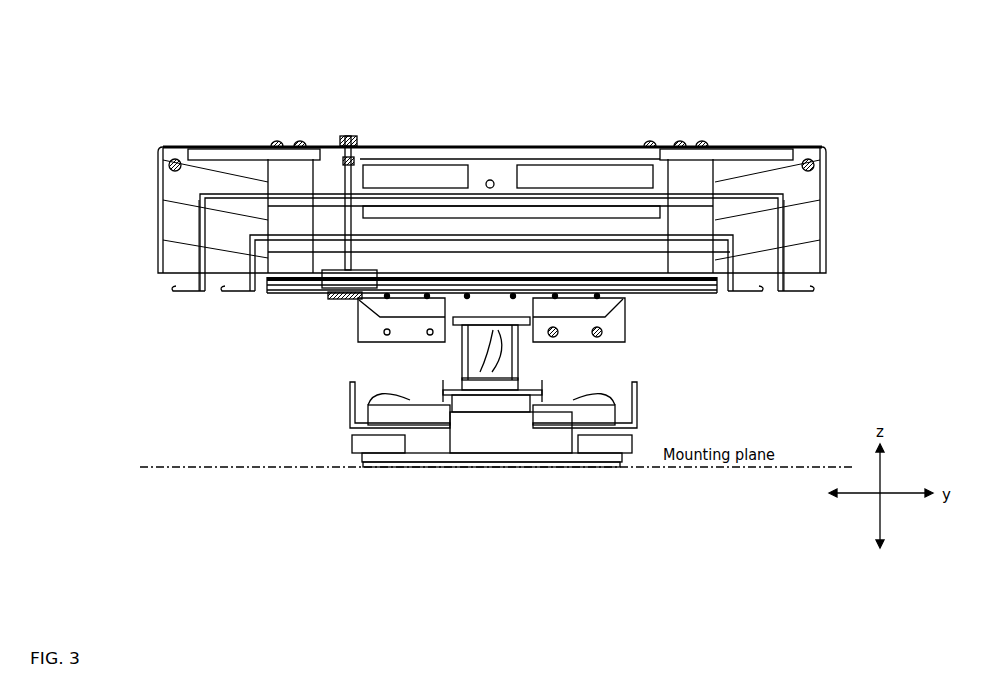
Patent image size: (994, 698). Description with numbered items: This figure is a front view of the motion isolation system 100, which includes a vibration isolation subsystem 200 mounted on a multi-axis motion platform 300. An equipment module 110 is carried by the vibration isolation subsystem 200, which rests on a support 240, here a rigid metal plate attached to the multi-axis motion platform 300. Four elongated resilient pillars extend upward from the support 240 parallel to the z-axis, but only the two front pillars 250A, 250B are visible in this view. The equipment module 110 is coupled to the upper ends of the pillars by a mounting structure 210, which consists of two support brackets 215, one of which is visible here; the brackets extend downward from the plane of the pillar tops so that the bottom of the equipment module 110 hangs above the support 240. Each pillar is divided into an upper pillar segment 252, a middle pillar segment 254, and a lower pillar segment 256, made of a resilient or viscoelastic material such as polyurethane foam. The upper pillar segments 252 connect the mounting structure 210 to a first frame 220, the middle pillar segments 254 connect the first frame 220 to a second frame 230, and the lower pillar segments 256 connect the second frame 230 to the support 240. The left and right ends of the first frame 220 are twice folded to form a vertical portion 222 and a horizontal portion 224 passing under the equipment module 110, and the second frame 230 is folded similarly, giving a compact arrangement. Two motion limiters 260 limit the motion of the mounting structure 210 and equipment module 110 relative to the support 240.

The motion isolation system 100 is at (59, 20).
The equipment module 110 is at (826, 273).
The vibration isolation subsystem 200 is at (97, 90).
The mounting structure 210 is at (208, 115).
The support bracket 215 is at (262, 147).
The first frame 220 is at (483, 188).
The vertical portion 222 is at (200, 258).
The horizontal portion 224 is at (190, 292).
The second frame 230 is at (505, 235).
The support 240 is at (293, 292).
The elongated resilient pillar 250A is at (92, 128).
The elongated resilient pillar 250B is at (882, 128).
The upper pillar segment 252 is at (268, 182).
The middle pillar segment 254 is at (268, 221).
The lower pillar segment 256 is at (268, 258).
The motion limiter 260 is at (333, 318).
The multi-axis motion platform 300 is at (330, 431).